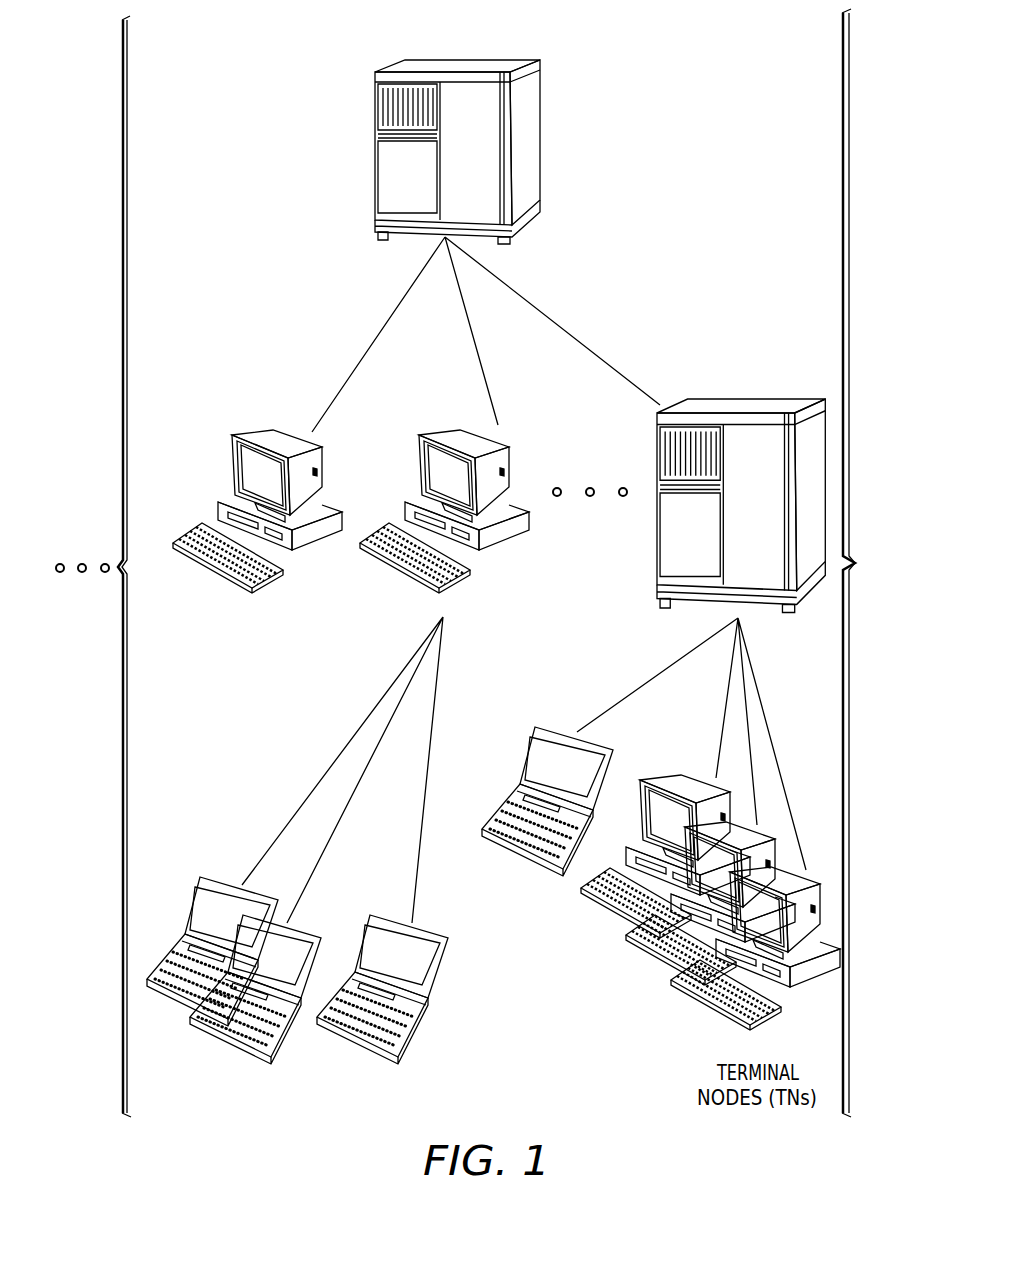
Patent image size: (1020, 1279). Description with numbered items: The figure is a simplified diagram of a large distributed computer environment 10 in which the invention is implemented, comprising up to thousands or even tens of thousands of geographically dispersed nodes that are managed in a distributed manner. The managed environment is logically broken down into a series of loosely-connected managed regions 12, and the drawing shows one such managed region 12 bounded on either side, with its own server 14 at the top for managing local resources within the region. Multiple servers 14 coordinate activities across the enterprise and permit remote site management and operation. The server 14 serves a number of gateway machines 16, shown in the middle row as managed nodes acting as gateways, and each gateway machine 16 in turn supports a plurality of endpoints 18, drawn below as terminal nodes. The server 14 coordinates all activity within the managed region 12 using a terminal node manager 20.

The distributed computer environment 10 is at (240, 779).
The managed region 12 is at (858, 229).
The server 14 is at (540, 66).
The gateway machine 16 is at (230, 458).
The endpoints 18 is at (461, 872).
The terminal node manager 20 is at (336, 66).